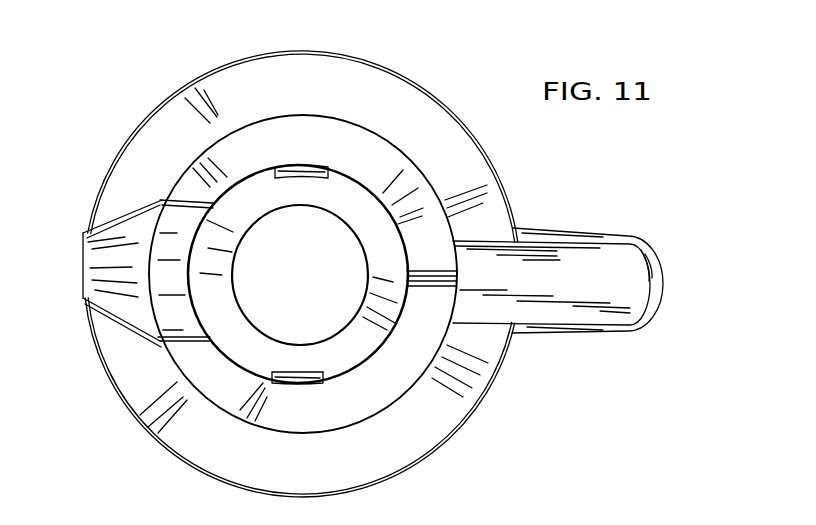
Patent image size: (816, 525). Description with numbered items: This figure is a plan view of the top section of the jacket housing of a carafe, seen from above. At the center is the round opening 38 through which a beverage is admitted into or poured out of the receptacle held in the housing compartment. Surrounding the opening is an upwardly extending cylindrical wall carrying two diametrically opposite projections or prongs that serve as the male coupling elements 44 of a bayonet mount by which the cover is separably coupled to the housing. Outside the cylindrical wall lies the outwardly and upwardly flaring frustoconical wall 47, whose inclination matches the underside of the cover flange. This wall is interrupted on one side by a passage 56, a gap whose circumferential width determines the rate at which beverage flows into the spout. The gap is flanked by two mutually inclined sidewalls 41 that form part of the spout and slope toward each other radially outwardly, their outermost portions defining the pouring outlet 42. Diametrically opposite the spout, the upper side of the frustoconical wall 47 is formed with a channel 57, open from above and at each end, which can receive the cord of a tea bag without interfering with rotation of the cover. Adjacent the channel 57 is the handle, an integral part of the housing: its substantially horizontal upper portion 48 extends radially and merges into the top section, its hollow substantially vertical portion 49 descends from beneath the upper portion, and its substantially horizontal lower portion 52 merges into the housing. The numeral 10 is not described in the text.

The hair dryer / appliance body 10 is at (448, 85).
The round opening 38 is at (322, 262).
The sidewalls 41 is at (122, 212).
The pouring outlet 42 is at (83, 277).
The male coupling elements 44 is at (300, 167).
The frustoconical wall 47 is at (245, 147).
The upper portion of the handle 48 is at (568, 275).
The vertical portion of the handle 49 is at (672, 268).
The lower portion of the handle 52 is at (565, 229).
The passage 56 is at (175, 260).
The channel 57 is at (437, 270).